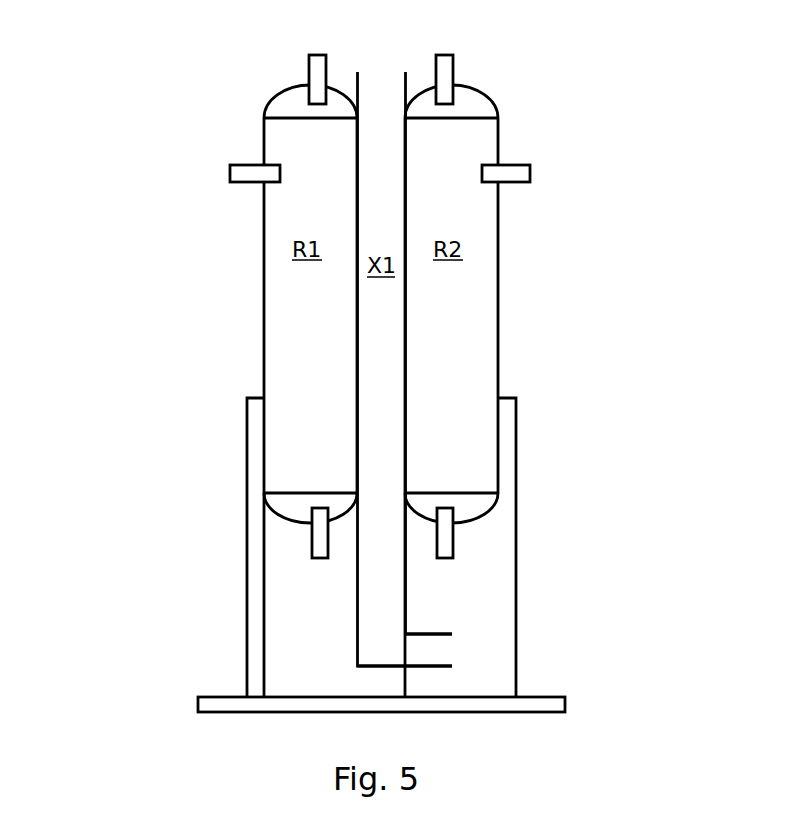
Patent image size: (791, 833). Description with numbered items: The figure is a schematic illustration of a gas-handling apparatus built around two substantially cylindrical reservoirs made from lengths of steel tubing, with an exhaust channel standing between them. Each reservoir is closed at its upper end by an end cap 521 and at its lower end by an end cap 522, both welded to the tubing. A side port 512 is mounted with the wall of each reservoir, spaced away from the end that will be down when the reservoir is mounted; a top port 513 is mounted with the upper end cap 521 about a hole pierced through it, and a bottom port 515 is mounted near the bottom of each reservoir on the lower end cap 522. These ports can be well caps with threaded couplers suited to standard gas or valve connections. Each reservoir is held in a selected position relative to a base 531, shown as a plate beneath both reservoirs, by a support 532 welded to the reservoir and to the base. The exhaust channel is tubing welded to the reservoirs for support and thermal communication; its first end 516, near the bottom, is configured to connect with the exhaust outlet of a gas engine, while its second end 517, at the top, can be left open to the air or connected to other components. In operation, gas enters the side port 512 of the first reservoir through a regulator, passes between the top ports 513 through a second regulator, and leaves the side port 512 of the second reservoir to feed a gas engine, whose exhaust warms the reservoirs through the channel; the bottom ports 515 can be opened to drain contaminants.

The side port 512 is at (245, 182).
The top port 513 is at (307, 77).
The bottom port 515 is at (312, 545).
The first end of exhaust tubing 516 is at (450, 647).
The second end of exhaust tubing 517 is at (375, 73).
The top end cap 521 is at (265, 107).
The bottom end cap 522 is at (287, 516).
The base 531 is at (212, 696).
The support 532 is at (246, 666).